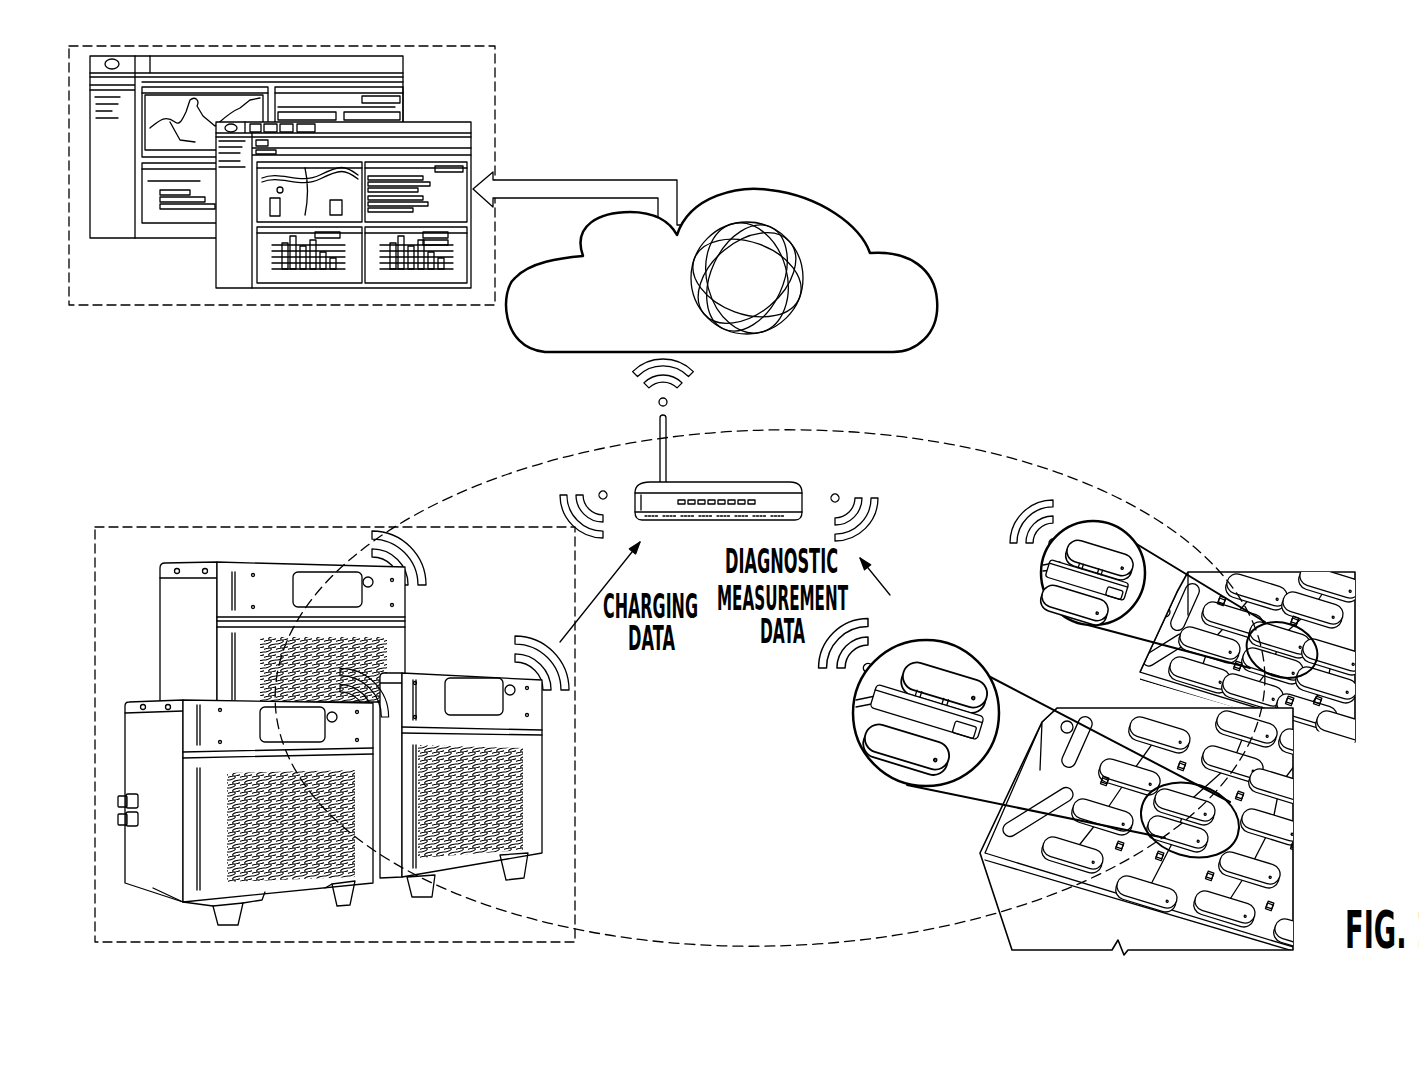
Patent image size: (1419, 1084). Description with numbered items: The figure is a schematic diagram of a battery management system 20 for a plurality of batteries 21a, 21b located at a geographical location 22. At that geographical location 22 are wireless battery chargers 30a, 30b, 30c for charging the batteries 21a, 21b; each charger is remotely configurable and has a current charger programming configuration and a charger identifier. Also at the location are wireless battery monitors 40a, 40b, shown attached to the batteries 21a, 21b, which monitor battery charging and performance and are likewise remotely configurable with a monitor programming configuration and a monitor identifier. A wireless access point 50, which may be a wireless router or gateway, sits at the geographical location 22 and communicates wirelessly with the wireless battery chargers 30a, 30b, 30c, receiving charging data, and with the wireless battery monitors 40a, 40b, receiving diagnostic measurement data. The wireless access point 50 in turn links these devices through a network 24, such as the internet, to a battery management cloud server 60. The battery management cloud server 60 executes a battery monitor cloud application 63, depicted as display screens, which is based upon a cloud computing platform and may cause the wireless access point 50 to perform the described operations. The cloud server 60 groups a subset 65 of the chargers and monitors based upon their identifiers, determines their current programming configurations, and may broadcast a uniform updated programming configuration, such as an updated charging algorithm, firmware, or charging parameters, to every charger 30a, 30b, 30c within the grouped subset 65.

The battery management system 20 is at (1217, 210).
The battery 21a is at (1005, 888).
The battery 21b is at (1147, 693).
The geographical location 22 is at (1145, 535).
The network 24 is at (857, 218).
The wireless battery charger 30a is at (128, 767).
The wireless battery charger 30b is at (162, 660).
The wireless battery charger 30c is at (448, 670).
The wireless battery monitor 40a is at (938, 655).
The wireless battery monitor 40b is at (1115, 540).
The wireless access point 50 is at (647, 478).
The battery management cloud server 60 is at (497, 130).
The battery monitor cloud application 63 is at (166, 218).
The subset 65 is at (193, 525).